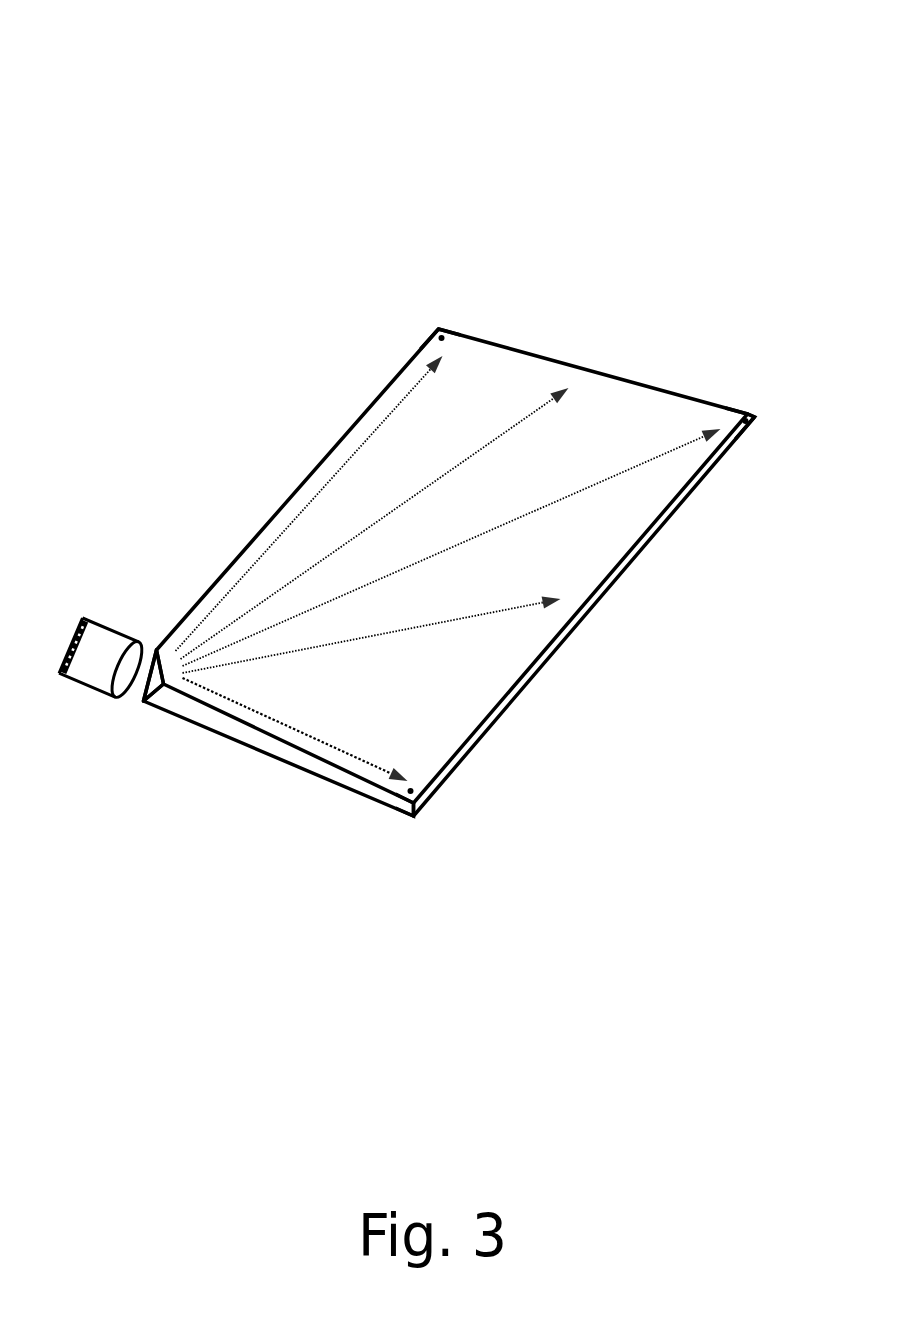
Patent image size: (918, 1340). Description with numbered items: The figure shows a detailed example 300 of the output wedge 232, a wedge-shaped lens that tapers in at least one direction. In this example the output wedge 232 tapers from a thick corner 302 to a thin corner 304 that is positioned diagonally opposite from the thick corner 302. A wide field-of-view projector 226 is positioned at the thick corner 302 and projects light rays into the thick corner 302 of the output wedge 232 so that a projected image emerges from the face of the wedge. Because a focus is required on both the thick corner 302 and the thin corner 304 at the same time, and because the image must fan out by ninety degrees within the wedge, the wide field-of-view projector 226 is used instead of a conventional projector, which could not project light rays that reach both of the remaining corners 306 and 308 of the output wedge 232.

The detailed example 300 is at (129, 72).
The output wedge 232 is at (602, 340).
The wide field-of-view projector 226 is at (117, 632).
The thick corner 302 is at (140, 700).
The thin corner 304 is at (748, 408).
The corner 306 is at (441, 323).
The corner 308 is at (415, 820).